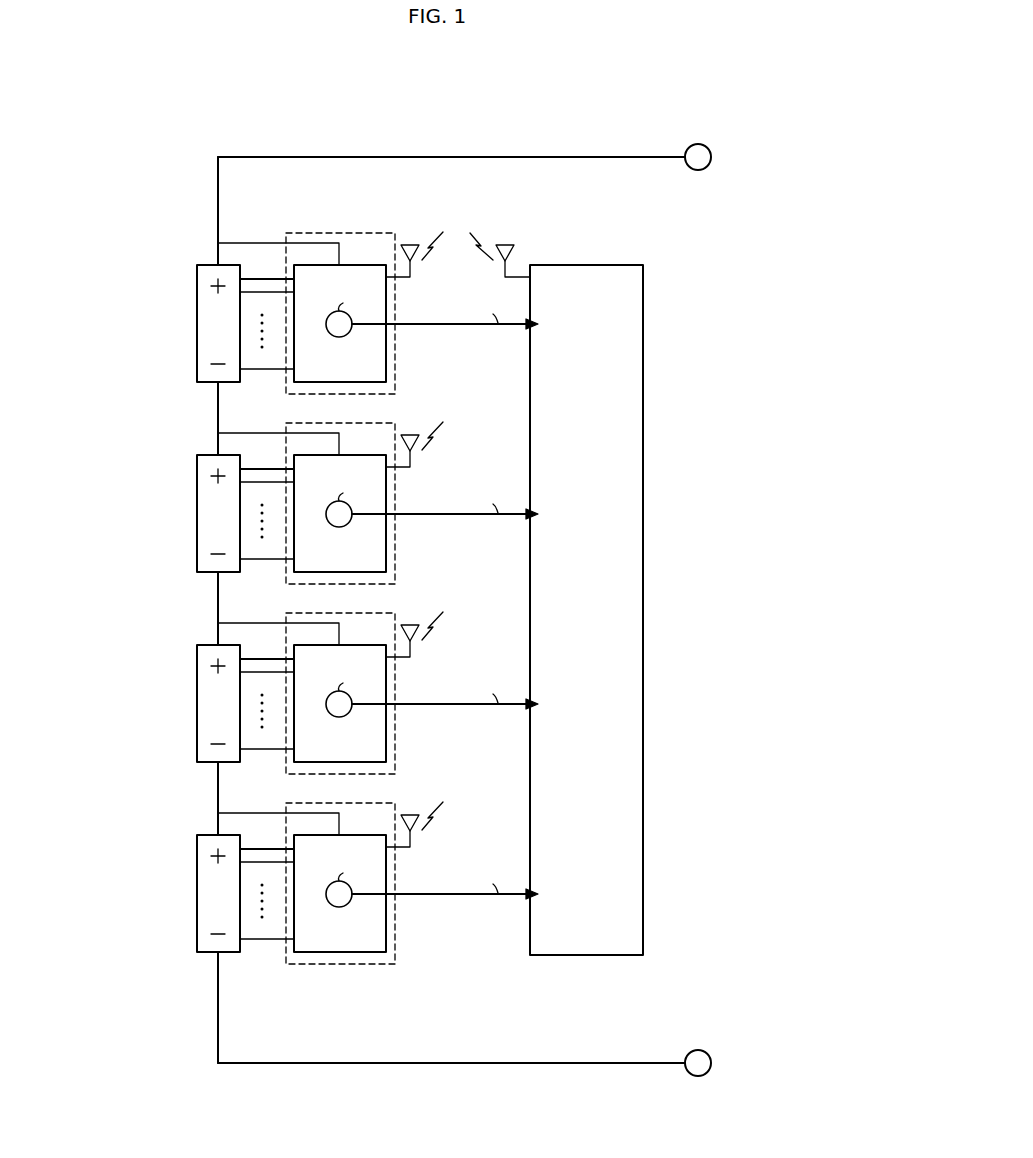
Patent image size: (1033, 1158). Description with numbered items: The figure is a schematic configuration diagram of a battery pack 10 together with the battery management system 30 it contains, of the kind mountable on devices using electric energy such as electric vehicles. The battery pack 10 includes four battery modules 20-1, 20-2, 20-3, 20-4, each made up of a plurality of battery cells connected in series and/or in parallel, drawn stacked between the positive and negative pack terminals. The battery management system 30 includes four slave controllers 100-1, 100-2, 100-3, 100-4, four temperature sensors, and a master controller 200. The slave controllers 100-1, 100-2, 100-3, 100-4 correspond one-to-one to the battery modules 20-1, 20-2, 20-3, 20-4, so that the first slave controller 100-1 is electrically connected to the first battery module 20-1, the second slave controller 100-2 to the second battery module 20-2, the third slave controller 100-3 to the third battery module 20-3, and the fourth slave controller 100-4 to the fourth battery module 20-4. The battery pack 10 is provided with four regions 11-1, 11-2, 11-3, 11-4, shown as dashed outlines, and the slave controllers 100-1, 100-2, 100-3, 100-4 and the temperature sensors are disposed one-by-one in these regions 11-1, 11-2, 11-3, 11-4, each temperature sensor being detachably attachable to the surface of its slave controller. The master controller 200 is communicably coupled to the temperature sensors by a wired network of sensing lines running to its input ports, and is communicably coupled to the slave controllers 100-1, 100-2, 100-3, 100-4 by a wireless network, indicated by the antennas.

The battery pack 10 is at (462, 586).
The first battery module 20-1 is at (197, 365).
The second battery module 20-2 is at (197, 555).
The third battery module 20-3 is at (197, 745).
The fourth battery module 20-4 is at (197, 935).
The first slave controller 100-1 is at (387, 343).
The second slave controller 100-2 is at (387, 533).
The third slave controller 100-3 is at (387, 723).
The fourth slave controller 100-4 is at (387, 913).
The first region 11-1 is at (396, 367).
The second region 11-2 is at (396, 557).
The third region 11-3 is at (396, 747).
The fourth region 11-4 is at (396, 937).
The battery management system 30 is at (519, 215).
The master controller 200 is at (645, 362).